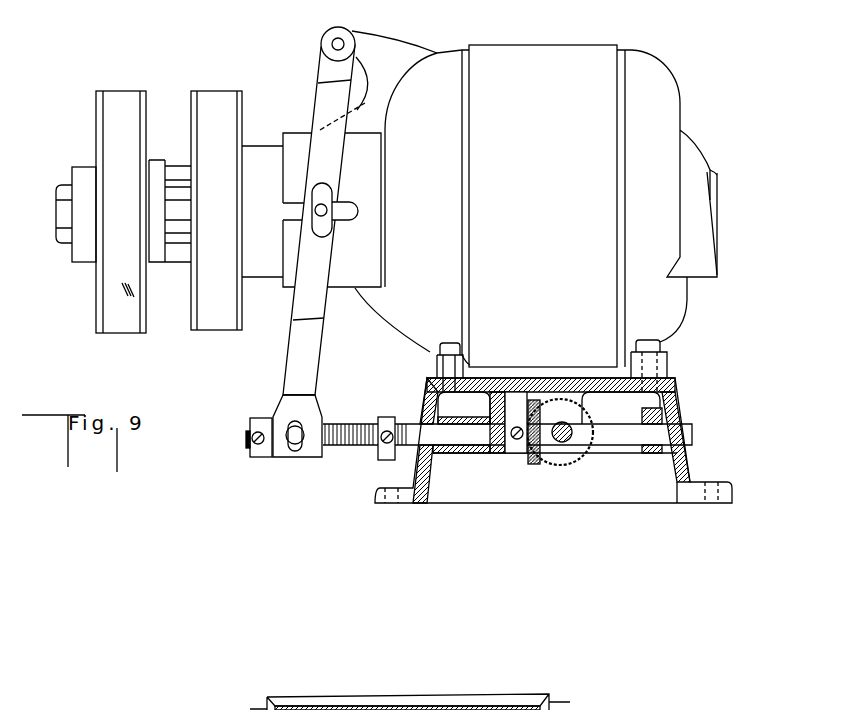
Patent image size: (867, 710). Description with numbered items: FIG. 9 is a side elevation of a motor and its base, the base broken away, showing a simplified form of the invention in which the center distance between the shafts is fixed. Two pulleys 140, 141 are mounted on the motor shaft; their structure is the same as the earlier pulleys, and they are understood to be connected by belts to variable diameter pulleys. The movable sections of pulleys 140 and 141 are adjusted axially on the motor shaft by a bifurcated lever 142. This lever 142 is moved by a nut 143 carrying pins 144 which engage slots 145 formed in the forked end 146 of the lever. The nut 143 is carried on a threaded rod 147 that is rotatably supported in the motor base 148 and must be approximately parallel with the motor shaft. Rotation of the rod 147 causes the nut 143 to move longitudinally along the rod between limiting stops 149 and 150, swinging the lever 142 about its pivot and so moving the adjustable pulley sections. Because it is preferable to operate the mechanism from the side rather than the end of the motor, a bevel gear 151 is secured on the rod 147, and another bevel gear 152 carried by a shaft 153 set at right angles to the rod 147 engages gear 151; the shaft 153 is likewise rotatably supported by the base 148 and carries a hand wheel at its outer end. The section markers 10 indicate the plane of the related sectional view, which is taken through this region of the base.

The section line 10- 10 is at (207, 460).
The pulley 140 is at (97, 334).
The pulley 141 is at (201, 334).
The bifurcated lever 142 is at (317, 97).
The nut 143 is at (283, 460).
The pins 144 is at (308, 418).
The slots 145 is at (296, 458).
The forked end 146 is at (277, 413).
The threaded rod 147 is at (690, 430).
The motor base 148 is at (677, 390).
The limiting stop 149 is at (253, 462).
The limiting stop 150 is at (385, 458).
The bevel gear 151 is at (527, 455).
The bevel gear 152 is at (582, 468).
The shaft 153 is at (563, 445).